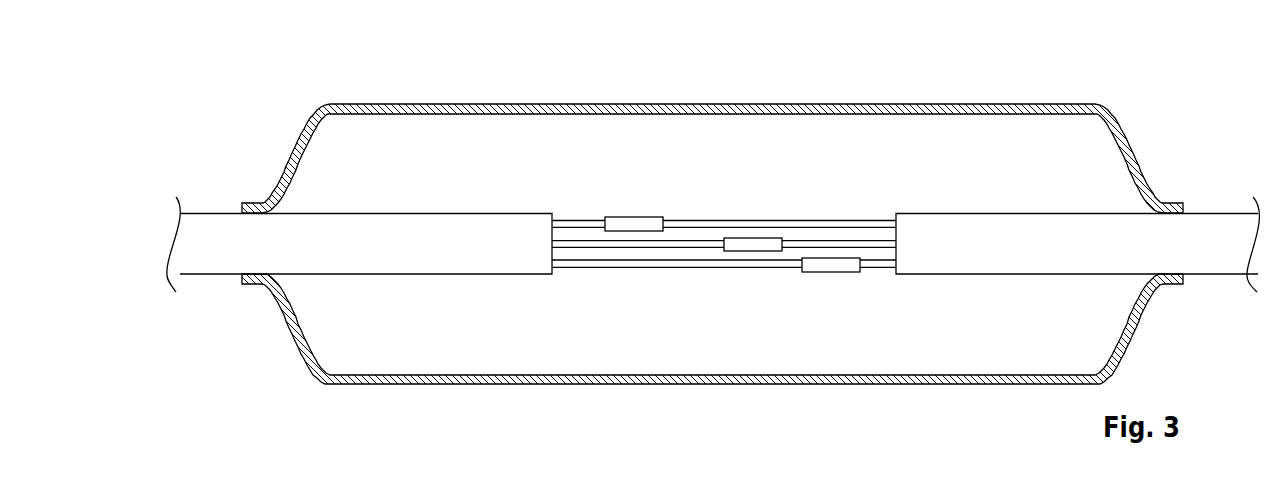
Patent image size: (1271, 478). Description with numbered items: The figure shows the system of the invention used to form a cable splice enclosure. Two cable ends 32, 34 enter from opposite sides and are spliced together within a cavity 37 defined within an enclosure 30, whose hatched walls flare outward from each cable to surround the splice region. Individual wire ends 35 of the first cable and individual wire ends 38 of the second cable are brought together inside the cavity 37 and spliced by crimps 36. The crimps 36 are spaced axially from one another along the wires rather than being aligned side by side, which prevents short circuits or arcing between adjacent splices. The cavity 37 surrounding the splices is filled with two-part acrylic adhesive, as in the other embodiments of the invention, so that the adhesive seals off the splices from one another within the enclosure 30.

The enclosure 30 is at (616, 104).
The cable end 32 is at (497, 268).
The cable end 34 is at (957, 268).
The wire ends 35 is at (573, 220).
The crimps 36 is at (635, 217).
The cavity 37 is at (699, 174).
The wire ends 38 is at (818, 240).